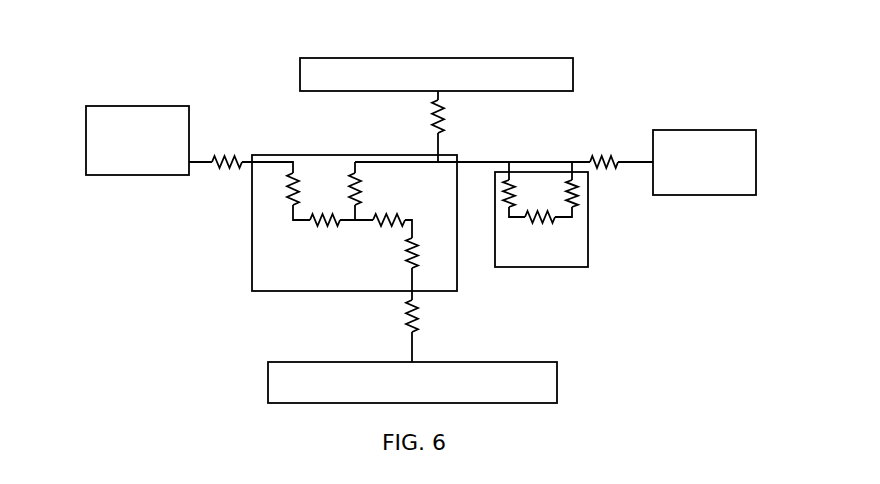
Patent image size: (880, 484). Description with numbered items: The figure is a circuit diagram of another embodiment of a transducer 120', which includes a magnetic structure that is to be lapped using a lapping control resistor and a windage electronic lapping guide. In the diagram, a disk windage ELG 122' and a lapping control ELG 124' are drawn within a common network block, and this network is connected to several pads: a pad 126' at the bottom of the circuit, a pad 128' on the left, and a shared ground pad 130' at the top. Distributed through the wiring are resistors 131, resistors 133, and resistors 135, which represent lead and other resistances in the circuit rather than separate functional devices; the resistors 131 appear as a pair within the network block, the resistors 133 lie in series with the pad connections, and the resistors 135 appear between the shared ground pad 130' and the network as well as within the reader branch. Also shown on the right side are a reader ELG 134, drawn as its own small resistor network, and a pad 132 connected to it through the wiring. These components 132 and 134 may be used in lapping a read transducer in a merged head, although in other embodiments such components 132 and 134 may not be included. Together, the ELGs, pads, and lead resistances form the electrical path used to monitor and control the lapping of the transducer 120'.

The transducer 120' is at (404, 208).
The disk windage ELG 122' is at (297, 239).
The lapping control ELG 124' is at (440, 259).
The pad 126' is at (452, 372).
The pad 128' is at (118, 166).
The pad 130' is at (399, 64).
The resistors 131 is at (339, 186).
The pad 132 is at (686, 130).
The resistors 133 is at (219, 141).
The reader ELG 134 is at (575, 226).
The resistors 135 is at (487, 120).